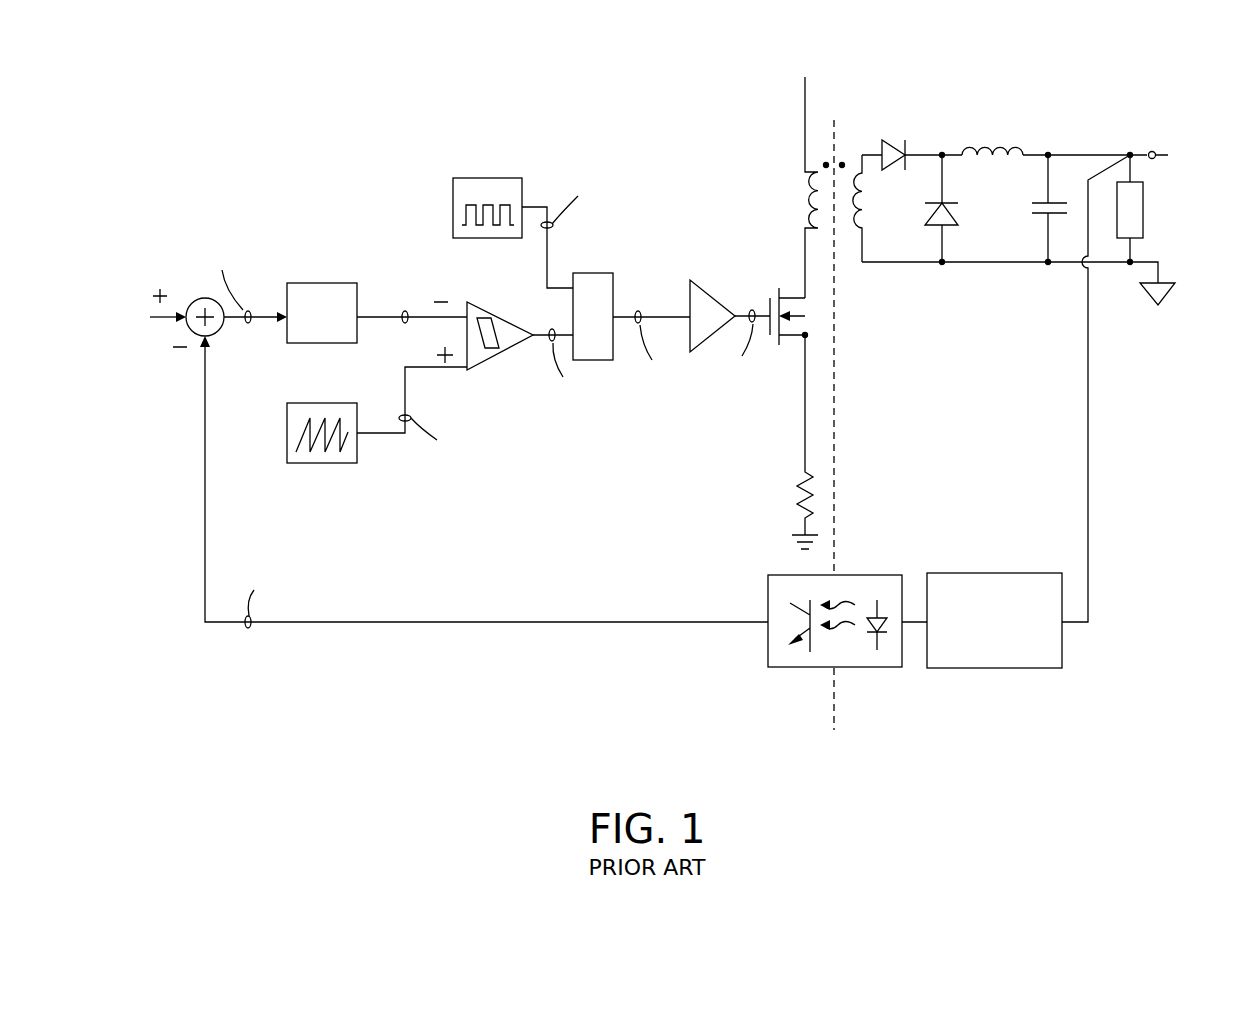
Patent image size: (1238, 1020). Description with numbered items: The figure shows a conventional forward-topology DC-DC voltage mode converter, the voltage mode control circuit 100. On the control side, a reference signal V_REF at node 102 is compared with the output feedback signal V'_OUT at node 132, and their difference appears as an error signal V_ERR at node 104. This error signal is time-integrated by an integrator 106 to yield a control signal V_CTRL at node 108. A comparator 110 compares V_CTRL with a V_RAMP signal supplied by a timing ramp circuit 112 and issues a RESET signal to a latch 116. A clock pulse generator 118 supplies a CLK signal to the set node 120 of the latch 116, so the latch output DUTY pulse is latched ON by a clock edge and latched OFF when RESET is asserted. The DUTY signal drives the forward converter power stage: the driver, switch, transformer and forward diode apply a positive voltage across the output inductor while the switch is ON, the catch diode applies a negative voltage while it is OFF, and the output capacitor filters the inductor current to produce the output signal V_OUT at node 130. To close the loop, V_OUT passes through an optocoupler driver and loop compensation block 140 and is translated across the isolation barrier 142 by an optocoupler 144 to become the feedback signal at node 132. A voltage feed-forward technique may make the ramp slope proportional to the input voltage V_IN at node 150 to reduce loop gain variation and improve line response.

The voltage mode control circuit 100 is at (224, 112).
The node 102 is at (160, 326).
The node 104 is at (254, 326).
The integrator 106 is at (357, 328).
The node 108 is at (405, 311).
The comparator 110 is at (497, 352).
The timing ramp circuit 112 is at (318, 465).
The latch 116 is at (613, 293).
The clock pulse generator 118 is at (522, 187).
The set node 120 is at (552, 239).
The node 130 is at (1153, 150).
The node 132 is at (350, 625).
The optocoupler driver and loop compensation block 140 is at (990, 668).
The isolation barrier 142 is at (838, 688).
The optocoupler 144 is at (768, 641).
The node 150 is at (806, 92).